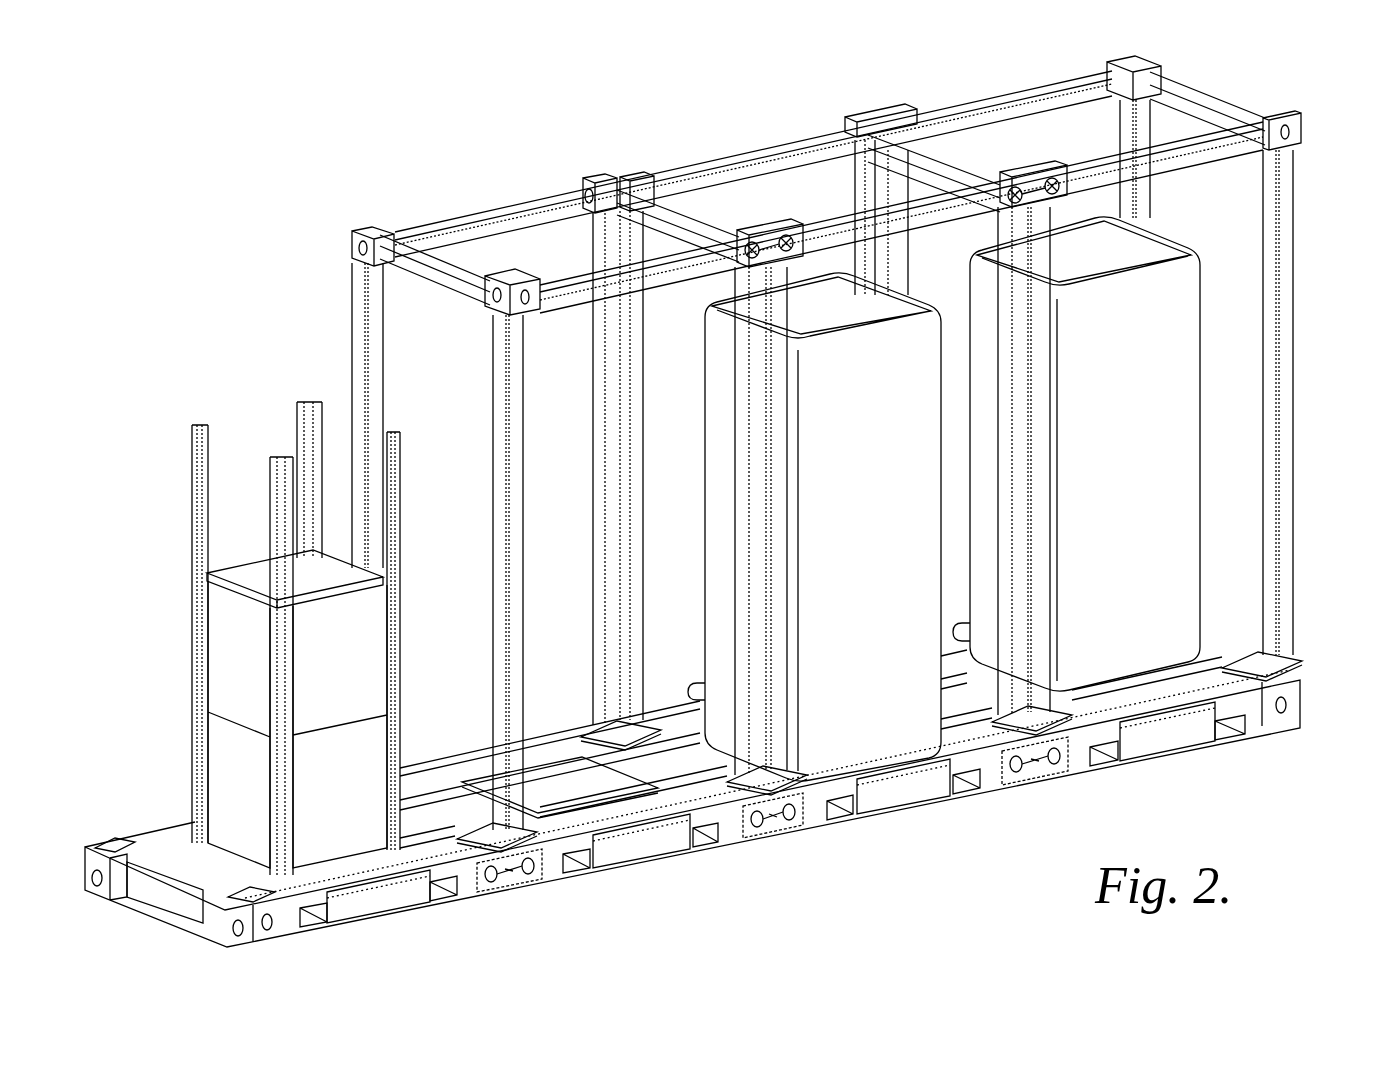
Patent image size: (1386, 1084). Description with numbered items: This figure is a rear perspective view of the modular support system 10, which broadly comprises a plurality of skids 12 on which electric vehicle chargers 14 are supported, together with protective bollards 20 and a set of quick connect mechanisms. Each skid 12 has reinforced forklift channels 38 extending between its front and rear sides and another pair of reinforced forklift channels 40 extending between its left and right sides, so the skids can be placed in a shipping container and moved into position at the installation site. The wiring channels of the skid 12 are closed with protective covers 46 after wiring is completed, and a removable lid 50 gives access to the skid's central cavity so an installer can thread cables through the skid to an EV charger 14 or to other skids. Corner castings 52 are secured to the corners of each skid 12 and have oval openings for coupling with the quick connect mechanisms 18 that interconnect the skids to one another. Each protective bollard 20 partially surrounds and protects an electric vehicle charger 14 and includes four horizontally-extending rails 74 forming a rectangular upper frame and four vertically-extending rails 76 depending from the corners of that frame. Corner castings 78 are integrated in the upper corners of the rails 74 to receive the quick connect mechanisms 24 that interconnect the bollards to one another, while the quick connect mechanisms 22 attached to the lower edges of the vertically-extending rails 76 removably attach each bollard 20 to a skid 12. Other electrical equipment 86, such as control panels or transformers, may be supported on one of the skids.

The modular support system 10 is at (460, 105).
The skid 12 is at (735, 808).
The electric vehicle charger 14 is at (1180, 323).
The quick connect mechanism 18 is at (513, 880).
The protective bollard 20 is at (387, 177).
The quick connect mechanism 22 is at (1293, 665).
The quick connect mechanism 24 is at (773, 247).
The reinforced forklift channel 38 is at (437, 902).
The reinforced forklift channel 40 is at (217, 930).
The protective cover 46 is at (343, 903).
The removable lid 50 is at (555, 770).
The corner casting 52 is at (1293, 707).
The horizontally-extending rail 74 is at (613, 268).
The vertically-extending rail 76 is at (607, 470).
The corner casting 78 is at (372, 265).
The electrical equipment 86 is at (232, 657).